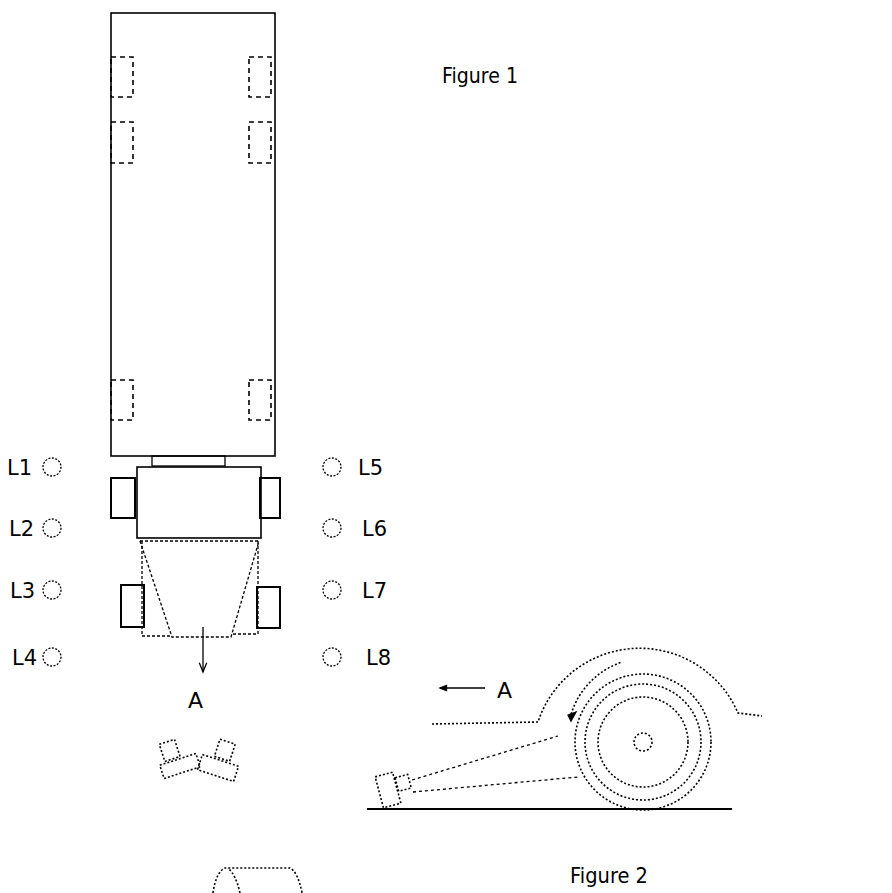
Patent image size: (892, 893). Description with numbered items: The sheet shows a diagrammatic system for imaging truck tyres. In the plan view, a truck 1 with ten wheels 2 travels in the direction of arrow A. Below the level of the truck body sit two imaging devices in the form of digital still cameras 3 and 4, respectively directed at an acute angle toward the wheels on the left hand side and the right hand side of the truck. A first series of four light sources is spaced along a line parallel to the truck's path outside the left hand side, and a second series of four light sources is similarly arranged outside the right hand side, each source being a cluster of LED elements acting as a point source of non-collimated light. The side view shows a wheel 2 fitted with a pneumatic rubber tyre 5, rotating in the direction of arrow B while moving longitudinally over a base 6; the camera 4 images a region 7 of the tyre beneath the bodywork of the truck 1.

In FIG. 1, the truck 1 is at (346, 215).
In FIG. 2, the truck 1 is at (578, 663).
In FIG. 1, the wheels 2 is at (118, 78).
In FIG. 2, the wheels 2 is at (655, 717).
In FIG. 1, the digital still camera 3 is at (160, 766).
In FIG. 1, the digital still camera 4 is at (214, 780).
In FIG. 2, the digital still camera 4 is at (395, 793).
In FIG. 2, the pneumatic rubber tyre 5 is at (698, 755).
In FIG. 2, the base 6 is at (497, 812).
In FIG. 2, the region of the tyre 7 is at (578, 750).